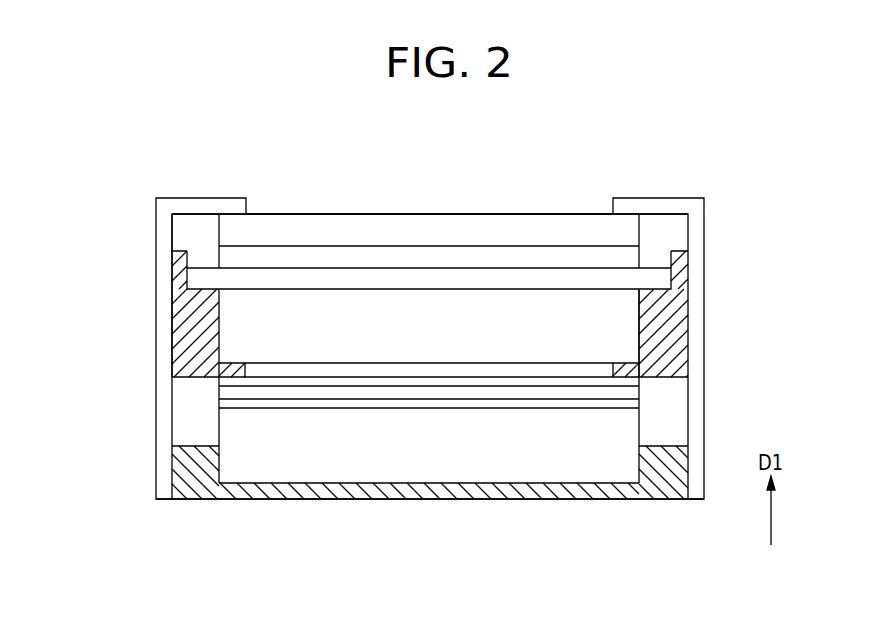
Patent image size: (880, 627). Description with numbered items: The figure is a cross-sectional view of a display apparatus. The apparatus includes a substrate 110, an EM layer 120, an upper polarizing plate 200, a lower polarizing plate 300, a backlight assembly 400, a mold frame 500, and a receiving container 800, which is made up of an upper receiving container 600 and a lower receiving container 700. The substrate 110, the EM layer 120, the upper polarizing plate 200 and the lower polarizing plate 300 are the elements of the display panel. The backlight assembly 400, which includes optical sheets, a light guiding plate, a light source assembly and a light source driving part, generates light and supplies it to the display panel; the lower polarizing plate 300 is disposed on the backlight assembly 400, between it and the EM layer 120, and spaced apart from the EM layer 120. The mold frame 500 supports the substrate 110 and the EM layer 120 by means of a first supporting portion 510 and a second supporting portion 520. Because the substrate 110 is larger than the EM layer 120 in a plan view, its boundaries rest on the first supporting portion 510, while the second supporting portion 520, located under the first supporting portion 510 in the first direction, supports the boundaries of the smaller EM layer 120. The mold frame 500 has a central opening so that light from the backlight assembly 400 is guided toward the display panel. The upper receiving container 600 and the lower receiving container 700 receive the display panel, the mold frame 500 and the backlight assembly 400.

The receiving container 800 is at (78, 487).
The upper receiving container 600 is at (162, 249).
The lower receiving container 700 is at (177, 473).
The upper polarizing plate 200 is at (647, 236).
The substrate 110 is at (670, 272).
The EM layer 120 is at (633, 318).
The first supporting portion 510 is at (662, 301).
The mold frame 500 is at (680, 347).
The second supporting portion 520 is at (642, 372).
The lower polarizing plate 300 is at (647, 393).
The backlight assembly 400 is at (429, 463).